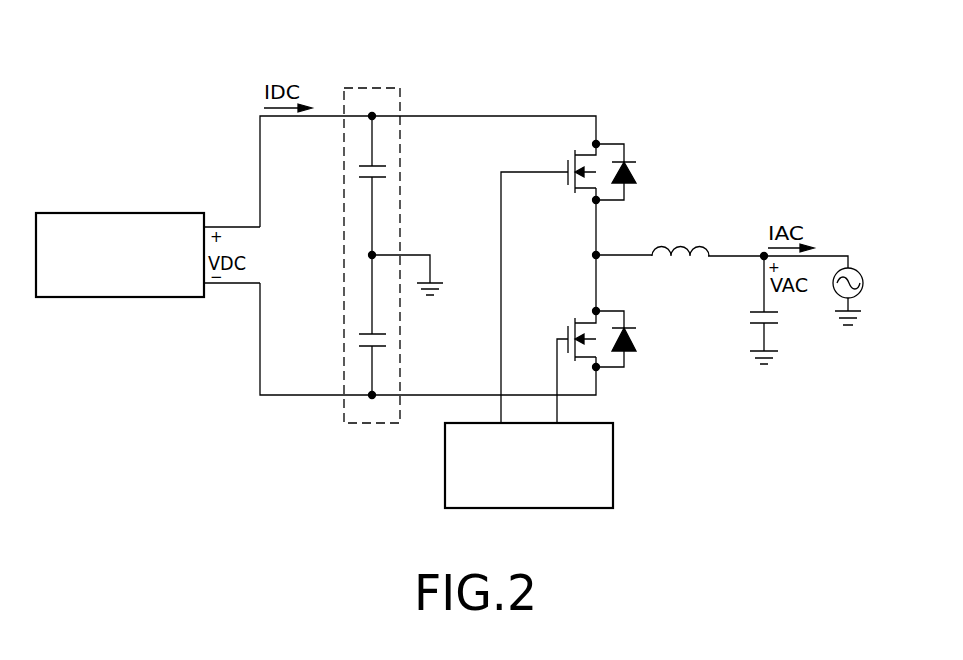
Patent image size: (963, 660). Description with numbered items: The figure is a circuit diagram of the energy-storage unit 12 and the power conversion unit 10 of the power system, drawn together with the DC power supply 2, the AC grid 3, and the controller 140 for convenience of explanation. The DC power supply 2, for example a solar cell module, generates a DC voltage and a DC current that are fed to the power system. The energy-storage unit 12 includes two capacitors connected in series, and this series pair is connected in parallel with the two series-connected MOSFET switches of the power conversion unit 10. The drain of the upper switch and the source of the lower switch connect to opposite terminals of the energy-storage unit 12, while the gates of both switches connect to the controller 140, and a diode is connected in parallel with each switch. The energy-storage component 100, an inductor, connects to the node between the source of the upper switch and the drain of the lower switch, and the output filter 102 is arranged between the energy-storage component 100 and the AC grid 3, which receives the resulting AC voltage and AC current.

The DC power supply 2 is at (120, 214).
The energy-storage unit 12 is at (374, 90).
The power conversion unit 10 is at (558, 103).
The energy-storage component 100 is at (680, 250).
The output filter 102 is at (780, 318).
The AC grid 3 is at (860, 275).
The controller 140 is at (608, 465).